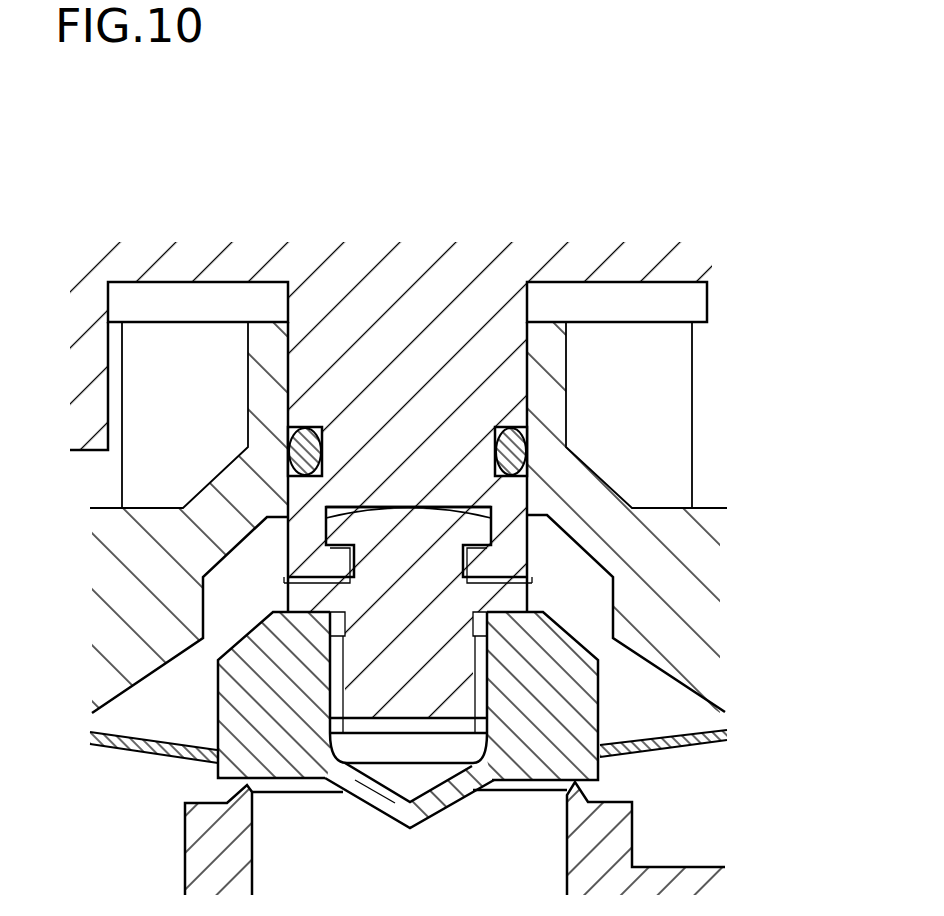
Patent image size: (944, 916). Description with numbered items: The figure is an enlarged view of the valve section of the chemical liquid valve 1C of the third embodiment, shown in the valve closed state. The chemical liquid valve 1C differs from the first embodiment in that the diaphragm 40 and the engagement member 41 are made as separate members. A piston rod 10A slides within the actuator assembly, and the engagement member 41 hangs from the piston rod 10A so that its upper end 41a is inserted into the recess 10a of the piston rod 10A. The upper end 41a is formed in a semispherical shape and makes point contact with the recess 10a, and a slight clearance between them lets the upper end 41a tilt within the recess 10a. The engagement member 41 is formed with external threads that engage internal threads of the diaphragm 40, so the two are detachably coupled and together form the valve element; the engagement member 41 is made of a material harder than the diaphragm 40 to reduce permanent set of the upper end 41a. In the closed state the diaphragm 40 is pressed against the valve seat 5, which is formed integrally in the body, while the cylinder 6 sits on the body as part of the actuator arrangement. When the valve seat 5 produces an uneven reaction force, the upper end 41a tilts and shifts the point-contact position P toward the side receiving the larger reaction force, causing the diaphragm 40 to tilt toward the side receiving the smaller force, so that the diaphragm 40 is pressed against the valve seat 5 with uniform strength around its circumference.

The chemical liquid valve 1C is at (662, 168).
The piston rod 10A is at (395, 268).
The recess 10a is at (527, 578).
The engagement member 41 is at (317, 604).
The upper end 41a is at (348, 524).
The diaphragm 40 is at (242, 673).
The valve seat 5 is at (235, 790).
The cylinder 6 is at (680, 565).
The position having point-contact P is at (410, 500).